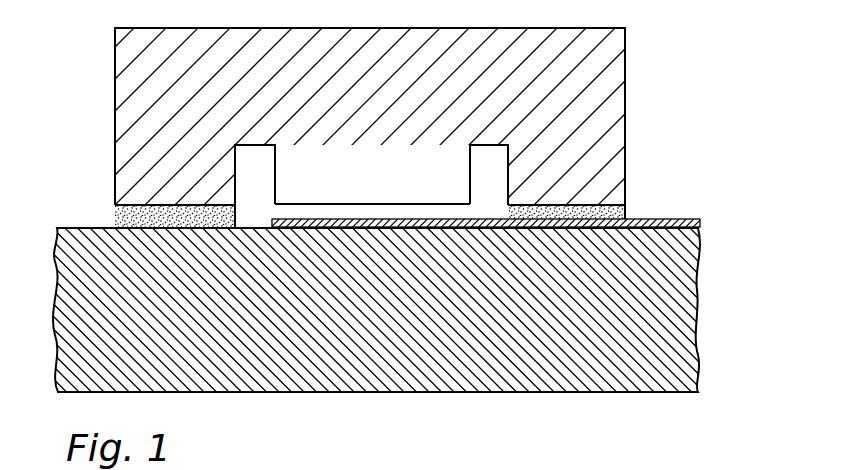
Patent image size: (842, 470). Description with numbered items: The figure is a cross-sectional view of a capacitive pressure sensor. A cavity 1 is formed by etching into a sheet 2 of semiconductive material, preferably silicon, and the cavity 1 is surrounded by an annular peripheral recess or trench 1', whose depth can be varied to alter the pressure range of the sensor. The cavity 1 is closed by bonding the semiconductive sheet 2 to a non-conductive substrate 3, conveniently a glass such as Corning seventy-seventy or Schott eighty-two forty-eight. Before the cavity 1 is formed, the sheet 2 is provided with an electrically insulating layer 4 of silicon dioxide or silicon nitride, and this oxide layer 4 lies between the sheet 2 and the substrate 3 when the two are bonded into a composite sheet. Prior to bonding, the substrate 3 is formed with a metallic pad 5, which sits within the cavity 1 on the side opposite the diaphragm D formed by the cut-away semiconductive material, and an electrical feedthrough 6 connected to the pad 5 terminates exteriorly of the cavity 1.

The cavity 1 is at (386, 196).
The annular peripheral recess or trench 1' is at (517, 172).
The sheet of semiconductive material 2 is at (600, 67).
The substrate 3 is at (571, 380).
The electrically insulating layer 4 is at (622, 213).
The metallic pad 5 is at (280, 219).
The electrical feedthrough 6 is at (681, 219).
The diaphragm D is at (293, 160).